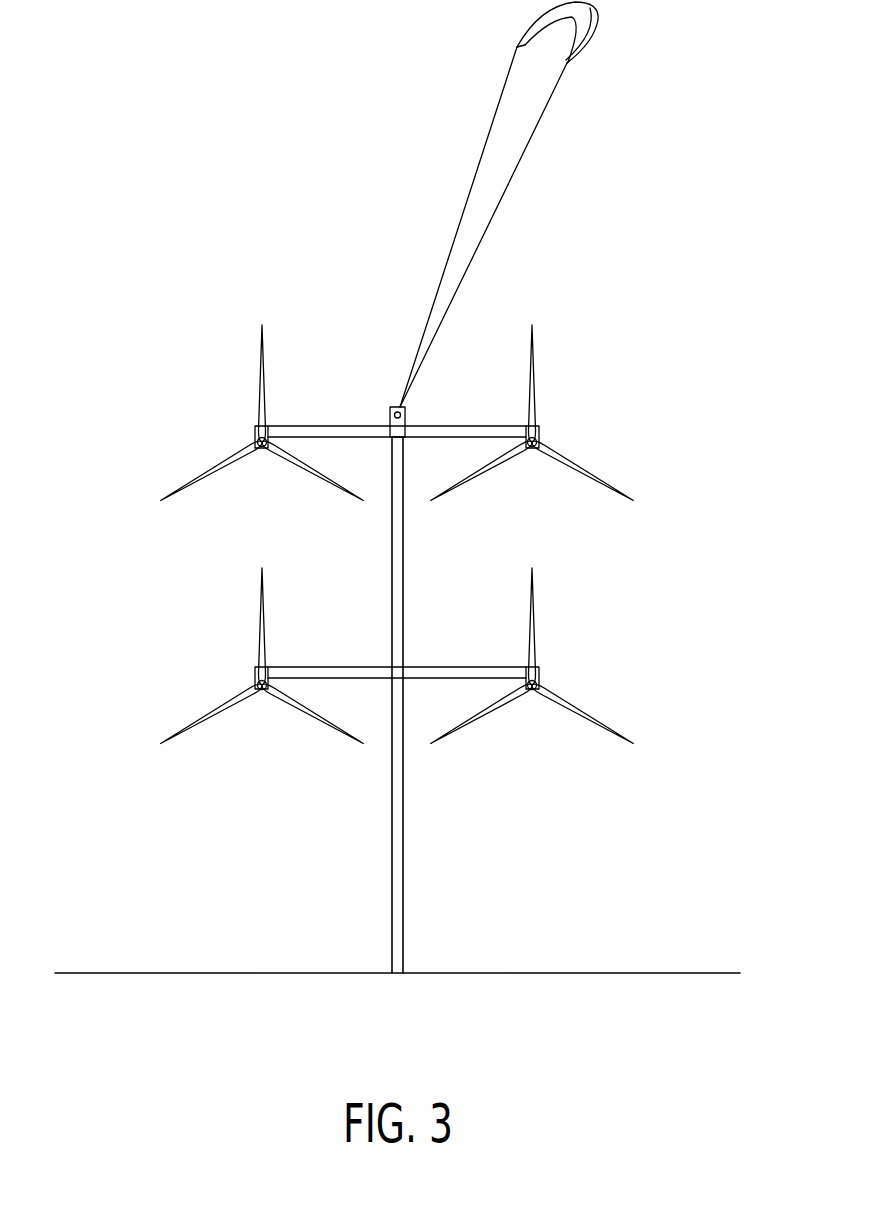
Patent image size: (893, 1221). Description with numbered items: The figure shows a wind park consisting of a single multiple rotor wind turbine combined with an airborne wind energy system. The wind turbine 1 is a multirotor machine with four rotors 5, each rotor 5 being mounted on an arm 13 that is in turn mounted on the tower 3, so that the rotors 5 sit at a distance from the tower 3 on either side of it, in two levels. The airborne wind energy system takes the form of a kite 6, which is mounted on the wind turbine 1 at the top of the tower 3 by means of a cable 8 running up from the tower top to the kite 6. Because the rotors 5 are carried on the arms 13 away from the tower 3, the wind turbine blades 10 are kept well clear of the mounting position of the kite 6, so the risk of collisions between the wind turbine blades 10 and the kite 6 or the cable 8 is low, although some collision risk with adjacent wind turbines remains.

The wind turbine 1 is at (678, 388).
The tower 3 is at (397, 837).
The rotor 5 is at (256, 441).
The kite 6 is at (630, 39).
The cable 8 is at (480, 173).
The wind turbine blade 10 is at (292, 468).
The arm 13 is at (330, 427).